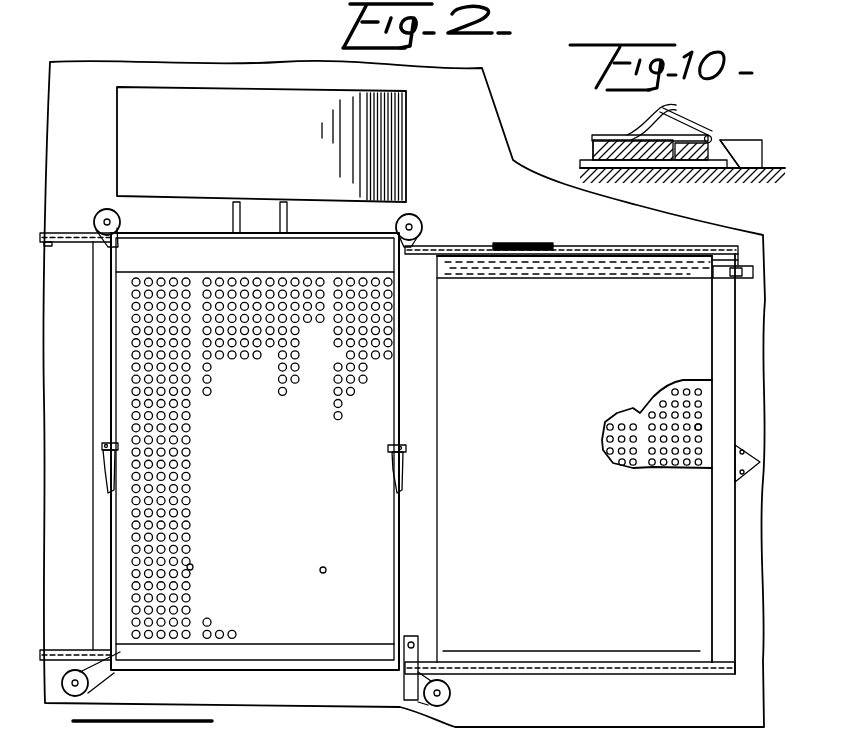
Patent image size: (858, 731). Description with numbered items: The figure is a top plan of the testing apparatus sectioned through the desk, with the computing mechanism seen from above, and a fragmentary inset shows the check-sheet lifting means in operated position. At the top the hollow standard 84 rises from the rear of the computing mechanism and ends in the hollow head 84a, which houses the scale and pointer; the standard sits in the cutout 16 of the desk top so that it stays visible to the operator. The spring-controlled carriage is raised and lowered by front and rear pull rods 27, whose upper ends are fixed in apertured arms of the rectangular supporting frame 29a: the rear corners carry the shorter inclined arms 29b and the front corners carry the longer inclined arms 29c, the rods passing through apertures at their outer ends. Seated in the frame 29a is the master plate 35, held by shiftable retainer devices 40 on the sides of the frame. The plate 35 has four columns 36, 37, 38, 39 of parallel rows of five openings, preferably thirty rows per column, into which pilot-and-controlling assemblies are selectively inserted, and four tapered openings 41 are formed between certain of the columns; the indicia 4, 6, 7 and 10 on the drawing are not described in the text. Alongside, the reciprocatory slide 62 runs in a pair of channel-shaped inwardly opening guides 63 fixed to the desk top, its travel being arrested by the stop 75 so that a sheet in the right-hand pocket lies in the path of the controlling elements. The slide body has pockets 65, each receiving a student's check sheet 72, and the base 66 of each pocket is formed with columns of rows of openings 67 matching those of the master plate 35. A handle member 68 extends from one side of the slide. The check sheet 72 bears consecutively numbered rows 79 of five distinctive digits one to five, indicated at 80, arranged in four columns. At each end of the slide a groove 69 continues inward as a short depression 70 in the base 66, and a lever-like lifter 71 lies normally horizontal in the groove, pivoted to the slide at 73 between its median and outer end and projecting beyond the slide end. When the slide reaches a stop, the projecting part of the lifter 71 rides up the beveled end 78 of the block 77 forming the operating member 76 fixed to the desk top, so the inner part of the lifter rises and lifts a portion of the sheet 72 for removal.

In FIG. 2, the hollow head 84a is at (261, 144).
In FIG. 2, the hollow standard 84 is at (266, 206).
In FIG. 2, the cutout 16 is at (288, 222).
In FIG. 2, the pull rods 27 is at (104, 210).
In FIG. 2, the supporting frame 29a is at (386, 208).
In FIG. 2, the rear apertured arms 29b is at (98, 214).
In FIG. 2, the front apertured arms 29c is at (90, 680).
In FIG. 2, the master plate 35 is at (377, 548).
In FIG. 2, the column of openings 36 is at (165, 281).
In FIG. 2, the column of openings 37 is at (240, 281).
In FIG. 2, the column of openings 38 is at (310, 281).
In FIG. 2, the column of openings 39 is at (364, 281).
In FIG. 2, the hole column 4 is at (160, 366).
In FIG. 2, the hole column 7 is at (368, 352).
In FIG. 2, the hole column 6 is at (148, 579).
In FIG. 2, the shiftable retainer devices 40 is at (100, 472).
In FIG. 2, the tapered openings 41 is at (192, 570).
In FIG. 2, the rows of digits 79 is at (482, 282).
In FIG. 2, the digits 80 is at (506, 366).
In FIG. 2, the guides 63 is at (597, 250).
In FIG. 2, the reciprocatory slide 62 is at (722, 631).
In FIG. 10, the reciprocatory slide 62 is at (627, 148).
In FIG. 2, the pockets 65 is at (707, 402).
In FIG. 2, the pocket base 66 is at (700, 421).
In FIG. 10, the pocket base 66 is at (592, 150).
In FIG. 2, the columns of openings 67 is at (702, 428).
In FIG. 2, the groove 69 is at (733, 250).
In FIG. 10, the groove 69 is at (707, 136).
In FIG. 2, the lifter 71 is at (742, 270).
In FIG. 10, the lifter 71 is at (713, 136).
In FIG. 2, the pointer 10 is at (690, 272).
In FIG. 2, the stop 75 is at (761, 470).
In FIG. 2, the check sheet 72 is at (658, 595).
In FIG. 10, the check sheet 72 is at (594, 140).
In FIG. 2, the handle member 68 is at (404, 696).
In FIG. 10, the depression 70 is at (668, 170).
In FIG. 10, the pivot 73 is at (716, 141).
In FIG. 10, the operating member 76 is at (750, 140).
In FIG. 10, the block 77 is at (763, 150).
In FIG. 10, the beveled end 78 is at (723, 175).